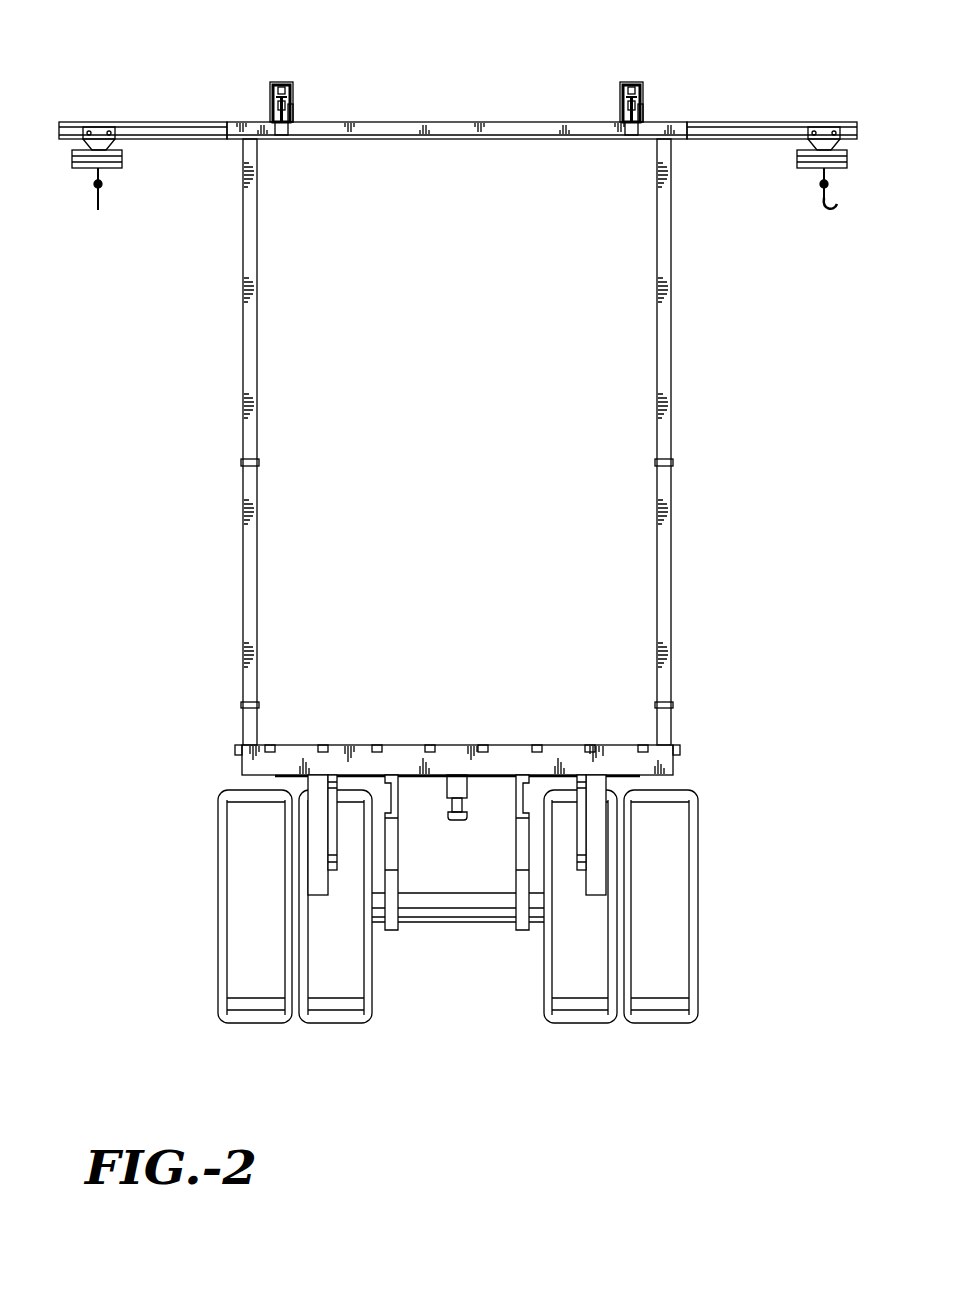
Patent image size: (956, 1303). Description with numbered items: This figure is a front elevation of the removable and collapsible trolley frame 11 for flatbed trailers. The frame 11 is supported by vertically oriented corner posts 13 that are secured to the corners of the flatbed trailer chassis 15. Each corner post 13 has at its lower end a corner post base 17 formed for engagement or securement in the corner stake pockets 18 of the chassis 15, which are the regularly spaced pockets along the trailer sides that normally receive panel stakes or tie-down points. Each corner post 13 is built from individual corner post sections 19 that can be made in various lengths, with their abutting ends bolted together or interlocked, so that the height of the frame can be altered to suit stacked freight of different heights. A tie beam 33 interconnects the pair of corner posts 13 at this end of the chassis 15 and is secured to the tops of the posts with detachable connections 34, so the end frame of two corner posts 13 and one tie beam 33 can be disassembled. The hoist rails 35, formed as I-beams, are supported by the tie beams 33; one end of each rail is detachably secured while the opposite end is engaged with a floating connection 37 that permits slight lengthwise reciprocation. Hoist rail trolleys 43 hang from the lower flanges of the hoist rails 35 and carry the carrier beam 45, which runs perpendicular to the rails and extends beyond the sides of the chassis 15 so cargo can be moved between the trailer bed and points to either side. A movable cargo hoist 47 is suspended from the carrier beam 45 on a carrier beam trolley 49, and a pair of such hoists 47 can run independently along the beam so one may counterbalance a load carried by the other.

The trolley frame 11 is at (459, 93).
The corner post 13 is at (258, 591).
The flatbed trailer chassis 15 is at (674, 770).
The corner post base 17 is at (243, 728).
The stake pocket 18 is at (643, 745).
The corner post section 19 is at (243, 341).
The tie beam 33 is at (515, 127).
The detachable connection 34 is at (242, 139).
The hoist rail 35 is at (281, 127).
The floating connection 37 is at (282, 82).
The hoist rail trolley 43 is at (294, 116).
The carrier beam 45 is at (717, 141).
The cargo hoist 47 is at (122, 160).
The carrier beam trolley 49 is at (103, 133).